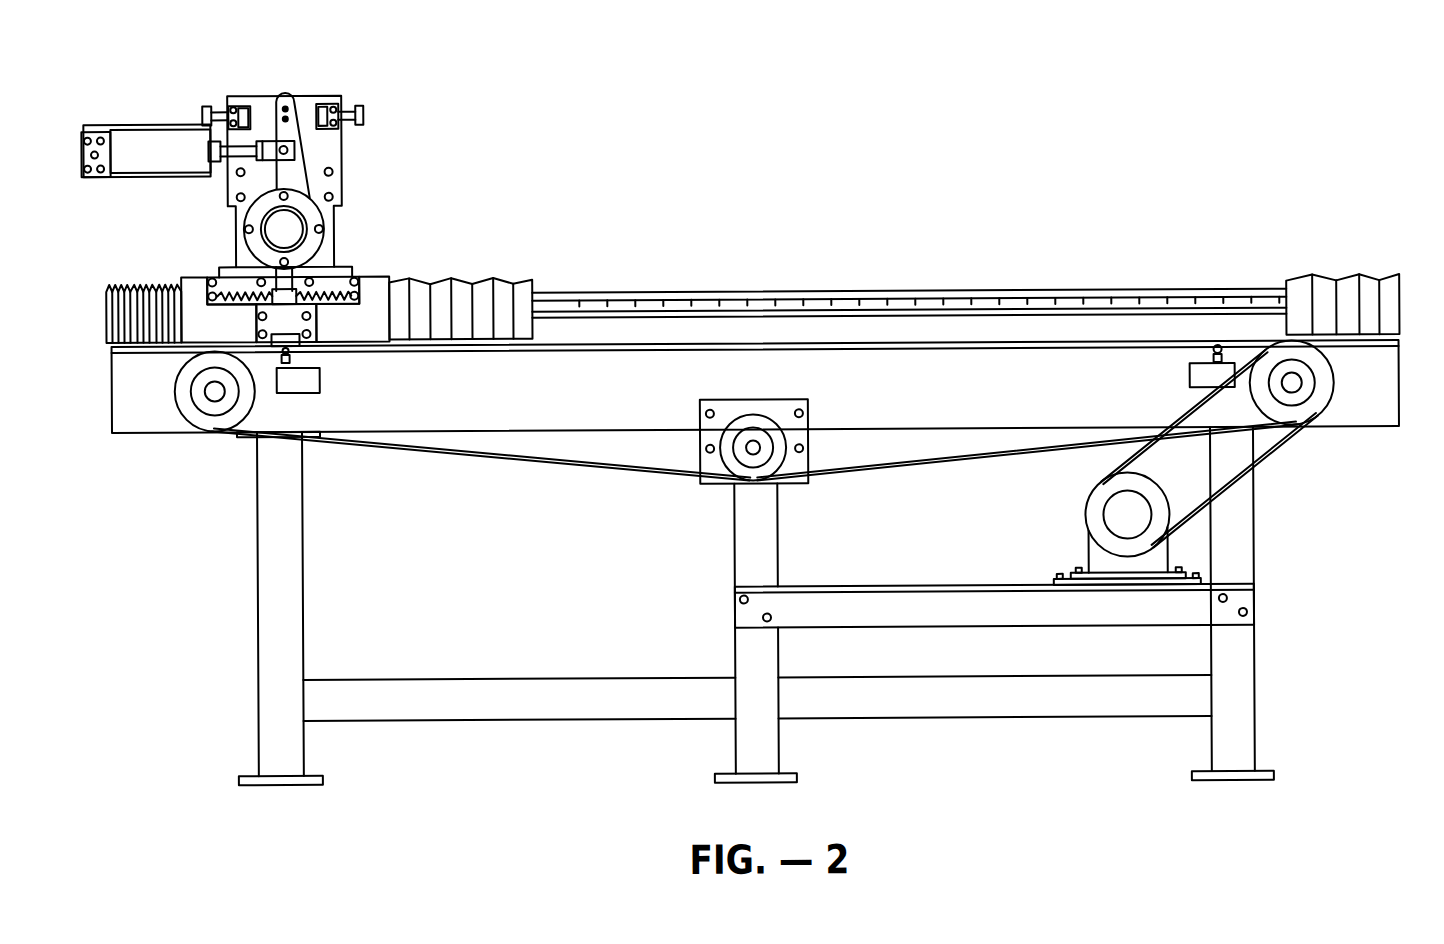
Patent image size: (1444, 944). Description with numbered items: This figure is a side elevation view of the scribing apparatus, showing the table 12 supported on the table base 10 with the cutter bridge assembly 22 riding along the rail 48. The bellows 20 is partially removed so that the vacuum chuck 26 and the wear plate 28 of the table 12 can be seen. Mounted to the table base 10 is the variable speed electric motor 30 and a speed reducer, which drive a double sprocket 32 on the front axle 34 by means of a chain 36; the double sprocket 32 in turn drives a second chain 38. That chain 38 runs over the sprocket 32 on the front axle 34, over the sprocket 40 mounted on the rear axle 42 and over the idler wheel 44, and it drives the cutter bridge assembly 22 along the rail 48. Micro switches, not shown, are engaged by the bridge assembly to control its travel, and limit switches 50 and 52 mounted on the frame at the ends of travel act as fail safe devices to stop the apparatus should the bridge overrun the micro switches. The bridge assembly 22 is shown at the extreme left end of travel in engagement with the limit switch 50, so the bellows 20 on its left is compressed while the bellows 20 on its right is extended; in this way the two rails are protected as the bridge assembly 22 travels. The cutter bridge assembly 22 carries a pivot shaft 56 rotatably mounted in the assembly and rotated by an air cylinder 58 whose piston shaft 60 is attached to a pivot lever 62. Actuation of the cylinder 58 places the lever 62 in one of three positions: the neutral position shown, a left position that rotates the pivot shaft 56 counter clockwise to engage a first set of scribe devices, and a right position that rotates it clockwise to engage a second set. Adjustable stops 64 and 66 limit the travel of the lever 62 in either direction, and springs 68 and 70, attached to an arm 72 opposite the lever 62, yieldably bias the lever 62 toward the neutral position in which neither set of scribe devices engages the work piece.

The table base 10 is at (735, 583).
The table 12 is at (1018, 294).
The bellows 20 is at (138, 288).
The cutter bridge assembly 22 is at (365, 152).
The vacuum chuck 26 is at (1232, 309).
The wear plate 28 is at (1172, 300).
The variable speed electric motor 30 is at (1086, 526).
The double sprocket 32 is at (1325, 380).
The front axle 34 is at (1300, 394).
The chain 36 is at (1260, 464).
The chain 38 is at (526, 470).
The sprocket 40 is at (180, 388).
The rear axle 42 is at (212, 395).
The idler wheel 44 is at (730, 468).
The rail 48 is at (852, 349).
The limit switch 50 is at (318, 380).
The limit switch 52 is at (1192, 378).
The pivot shaft 56 is at (300, 229).
The air cylinder 58 is at (145, 135).
The piston shaft 60 is at (240, 145).
The pivot lever 62 is at (310, 190).
The adjustable stop 64 is at (209, 106).
The adjustable stop 66 is at (361, 108).
The spring 68 is at (228, 293).
The spring 70 is at (333, 296).
The arm 72 is at (288, 275).